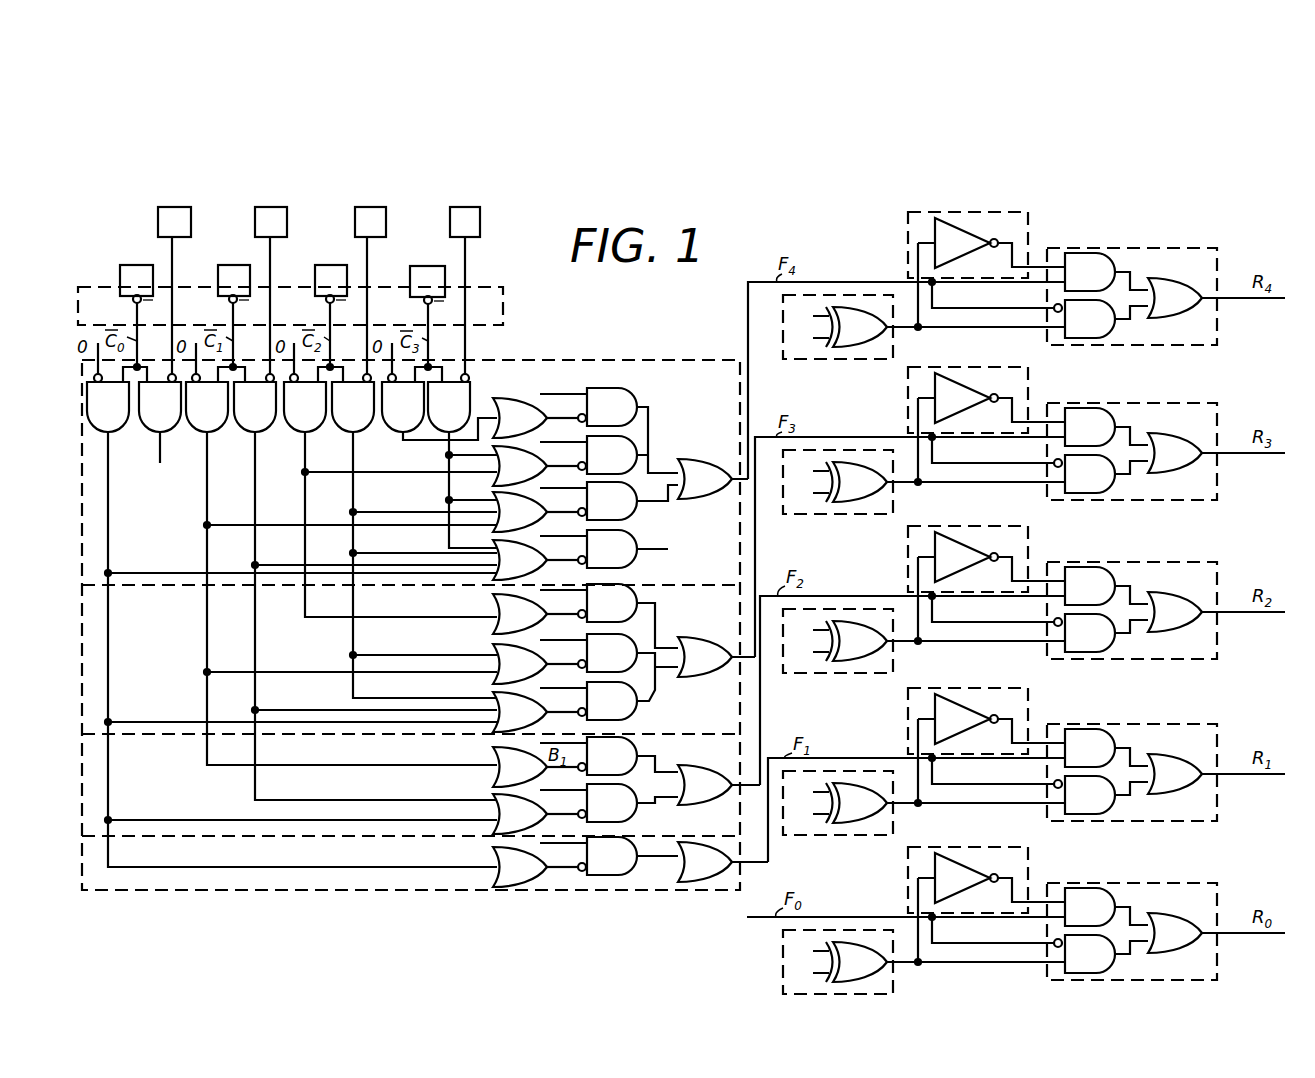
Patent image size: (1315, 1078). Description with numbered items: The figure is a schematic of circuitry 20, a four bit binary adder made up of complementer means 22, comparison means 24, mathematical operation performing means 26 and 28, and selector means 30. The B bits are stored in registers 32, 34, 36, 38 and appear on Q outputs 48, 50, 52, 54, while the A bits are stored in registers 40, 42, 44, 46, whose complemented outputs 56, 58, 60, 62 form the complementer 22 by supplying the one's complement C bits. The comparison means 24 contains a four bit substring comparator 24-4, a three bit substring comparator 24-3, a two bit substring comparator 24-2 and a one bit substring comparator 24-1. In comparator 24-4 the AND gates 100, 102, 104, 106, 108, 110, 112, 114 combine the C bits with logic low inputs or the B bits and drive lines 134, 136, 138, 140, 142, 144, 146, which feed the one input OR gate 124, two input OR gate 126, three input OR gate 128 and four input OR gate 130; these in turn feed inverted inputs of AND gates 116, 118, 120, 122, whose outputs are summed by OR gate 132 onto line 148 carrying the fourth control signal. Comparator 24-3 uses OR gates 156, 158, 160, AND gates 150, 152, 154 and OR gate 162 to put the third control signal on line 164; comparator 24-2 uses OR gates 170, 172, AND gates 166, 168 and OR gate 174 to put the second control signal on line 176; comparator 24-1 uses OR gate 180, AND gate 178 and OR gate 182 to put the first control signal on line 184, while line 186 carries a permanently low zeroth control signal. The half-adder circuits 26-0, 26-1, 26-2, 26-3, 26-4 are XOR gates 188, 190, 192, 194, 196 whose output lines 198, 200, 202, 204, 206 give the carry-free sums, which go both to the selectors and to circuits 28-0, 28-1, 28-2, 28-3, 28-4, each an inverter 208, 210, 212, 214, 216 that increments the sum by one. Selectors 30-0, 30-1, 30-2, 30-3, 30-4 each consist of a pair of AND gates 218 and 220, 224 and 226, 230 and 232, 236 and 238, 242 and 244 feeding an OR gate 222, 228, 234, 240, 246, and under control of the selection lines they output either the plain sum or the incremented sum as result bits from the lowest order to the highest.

The circuitry 20 is at (736, 272).
The complementer means 22 is at (509, 312).
The comparison means 24 is at (600, 349).
The one bit substring comparator 24-1 is at (213, 863).
The two bit substring comparator 24-2 is at (185, 764).
The three bit substring comparator 24-3 is at (188, 634).
The four bit substring comparator 24-4 is at (188, 528).
The mathematical operation performing means 26 is at (829, 289).
The half-adder without carry circuit 26-0 is at (797, 943).
The half-adder without carry circuit 26-1 is at (844, 801).
The half-adder without carry circuit 26-2 is at (845, 633).
The half-adder without carry circuit 26-3 is at (845, 480).
The half-adder without carry circuit 26-4 is at (836, 323).
The mathematical operation performing means 28 is at (899, 221).
The incrementing circuit 28-0 is at (949, 888).
The incrementing circuit 28-1 is at (1000, 728).
The incrementing circuit 28-2 is at (986, 565).
The incrementing circuit 28-3 is at (953, 408).
The incrementing circuit 28-4 is at (1003, 267).
The selector means 30 is at (1194, 231).
The selector 30-0 is at (1167, 914).
The selector 30-1 is at (1168, 754).
The selector 30-2 is at (1166, 598).
The selector 30-3 is at (1167, 448).
The selector 30-4 is at (1166, 290).
The register 32 is at (158, 212).
The register 34 is at (255, 212).
The register 36 is at (386, 216).
The register 38 is at (481, 216).
The register 40 is at (121, 270).
The register 42 is at (247, 265).
The register 44 is at (345, 265).
The register 46 is at (444, 267).
The Q output 48 is at (168, 242).
The Q output 50 is at (273, 245).
The Q output 52 is at (358, 238).
The Q output 54 is at (468, 242).
The Q-bar output 56 is at (133, 300).
The Q-bar output 58 is at (229, 300).
The Q-bar output 60 is at (326, 300).
The Q-bar output 62 is at (424, 301).
The AND gate 100 is at (125, 423).
The AND gate 102 is at (154, 442).
The AND gate 104 is at (199, 434).
The AND gate 106 is at (244, 423).
The AND gate 108 is at (291, 423).
The AND gate 110 is at (341, 423).
The AND gate 112 is at (413, 393).
The AND gate 114 is at (466, 400).
The AND gate 116 is at (604, 394).
The AND gate 118 is at (618, 446).
The AND gate 120 is at (662, 505).
The AND gate 122 is at (650, 553).
The one input OR gate 124 is at (517, 415).
The two input OR gate 126 is at (493, 482).
The three input OR gate 128 is at (490, 528).
The four input OR gate 130 is at (493, 582).
The four input OR gate 132 is at (726, 460).
The line 134 is at (112, 556).
The line 136 is at (207, 537).
The line 138 is at (255, 510).
The line 140 is at (305, 510).
The line 142 is at (353, 510).
The line 144 is at (425, 447).
The line 146 is at (442, 466).
The line 148 is at (748, 329).
The AND gate 150 is at (640, 588).
The AND gate 152 is at (656, 611).
The AND gate 154 is at (656, 697).
The one input OR gate 156 is at (493, 622).
The two input OR gate 158 is at (493, 655).
The three input OR gate 160 is at (493, 694).
The three input OR gate 162 is at (720, 640).
The line 164 is at (756, 537).
The AND gate 166 is at (641, 724).
The AND gate 168 is at (641, 818).
The one input OR gate 170 is at (493, 760).
The two input OR gate 172 is at (493, 798).
The two input OR gate 174 is at (716, 766).
The line 176 is at (762, 698).
The AND gate 178 is at (617, 876).
The one input OR gate 180 is at (491, 858).
The one input OR gate 182 is at (690, 873).
The line 184 is at (773, 856).
The line 186 is at (752, 924).
The XOR gate 188 is at (853, 946).
The XOR gate 190 is at (895, 821).
The XOR gate 192 is at (893, 657).
The XOR gate 194 is at (897, 497).
The XOR gate 196 is at (897, 338).
The output line 198 is at (918, 964).
The output line 200 is at (906, 800).
The output line 202 is at (907, 637).
The output line 204 is at (907, 478).
The output line 206 is at (907, 322).
The inverter 208 is at (988, 838).
The inverter 210 is at (975, 697).
The inverter 212 is at (958, 553).
The inverter 214 is at (907, 386).
The inverter 216 is at (949, 249).
The AND gate 218 is at (1107, 963).
The AND gate 220 is at (1093, 897).
The OR gate 222 is at (1177, 926).
The AND gate 224 is at (1107, 804).
The AND gate 226 is at (1098, 731).
The OR gate 228 is at (1192, 748).
The AND gate 230 is at (1113, 647).
The AND gate 232 is at (1093, 577).
The two input OR gate 234 is at (1170, 603).
The AND gate 236 is at (1077, 481).
The AND gate 238 is at (1095, 409).
The two input OR gate 240 is at (1173, 437).
The AND gate 242 is at (1107, 326).
The AND gate 244 is at (1097, 253).
The two input OR gate 246 is at (1193, 273).